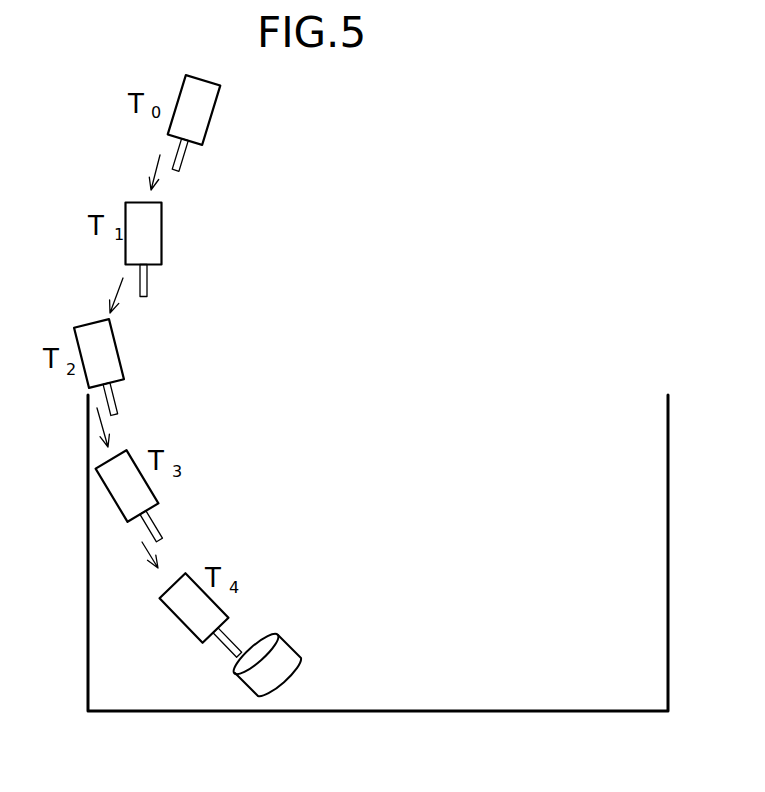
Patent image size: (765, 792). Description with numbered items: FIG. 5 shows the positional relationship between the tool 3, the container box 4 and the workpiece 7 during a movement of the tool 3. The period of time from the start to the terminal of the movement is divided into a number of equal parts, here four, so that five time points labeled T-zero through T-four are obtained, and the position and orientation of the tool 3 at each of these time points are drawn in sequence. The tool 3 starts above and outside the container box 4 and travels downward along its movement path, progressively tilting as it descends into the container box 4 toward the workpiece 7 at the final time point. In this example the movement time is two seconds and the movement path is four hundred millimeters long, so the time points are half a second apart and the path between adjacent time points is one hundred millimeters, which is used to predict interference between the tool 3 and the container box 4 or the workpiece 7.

The tool 3 is at (202, 110).
The container box 4 is at (667, 418).
The workpiece 7 is at (283, 655).